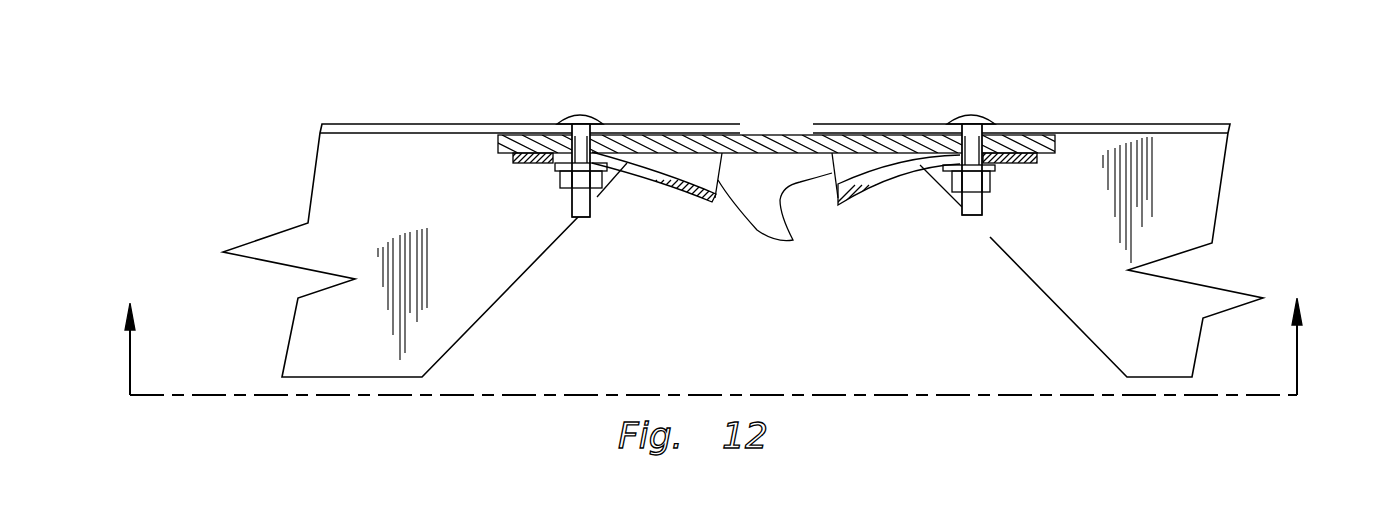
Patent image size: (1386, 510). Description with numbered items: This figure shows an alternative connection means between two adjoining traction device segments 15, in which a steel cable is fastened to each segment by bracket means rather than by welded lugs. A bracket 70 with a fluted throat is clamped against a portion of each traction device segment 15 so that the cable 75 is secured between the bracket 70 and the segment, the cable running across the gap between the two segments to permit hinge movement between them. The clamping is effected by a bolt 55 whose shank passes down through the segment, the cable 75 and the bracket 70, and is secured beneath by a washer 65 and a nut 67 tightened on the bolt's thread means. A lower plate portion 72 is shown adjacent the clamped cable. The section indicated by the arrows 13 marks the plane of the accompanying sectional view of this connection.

The section line 13- 13 is at (712, 320).
The traction device segment 15 is at (258, 118).
The bolt 55 is at (592, 112).
The washer 65 is at (555, 170).
The nut 67 is at (600, 190).
The curved plate 70 is at (670, 180).
The lower plate 72 is at (776, 208).
The hatched strip 75 is at (762, 133).